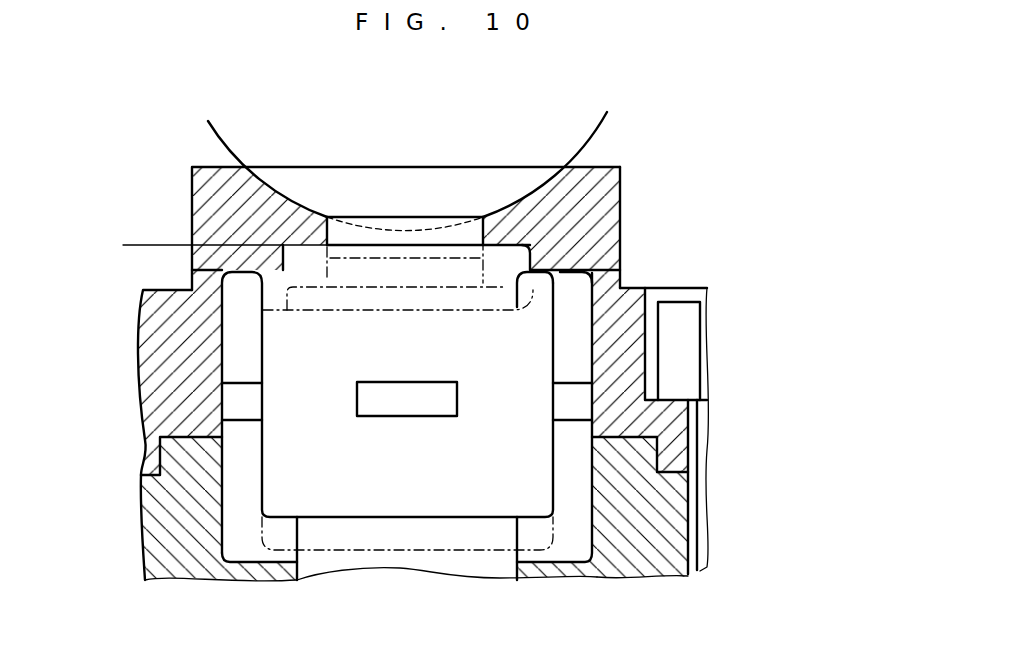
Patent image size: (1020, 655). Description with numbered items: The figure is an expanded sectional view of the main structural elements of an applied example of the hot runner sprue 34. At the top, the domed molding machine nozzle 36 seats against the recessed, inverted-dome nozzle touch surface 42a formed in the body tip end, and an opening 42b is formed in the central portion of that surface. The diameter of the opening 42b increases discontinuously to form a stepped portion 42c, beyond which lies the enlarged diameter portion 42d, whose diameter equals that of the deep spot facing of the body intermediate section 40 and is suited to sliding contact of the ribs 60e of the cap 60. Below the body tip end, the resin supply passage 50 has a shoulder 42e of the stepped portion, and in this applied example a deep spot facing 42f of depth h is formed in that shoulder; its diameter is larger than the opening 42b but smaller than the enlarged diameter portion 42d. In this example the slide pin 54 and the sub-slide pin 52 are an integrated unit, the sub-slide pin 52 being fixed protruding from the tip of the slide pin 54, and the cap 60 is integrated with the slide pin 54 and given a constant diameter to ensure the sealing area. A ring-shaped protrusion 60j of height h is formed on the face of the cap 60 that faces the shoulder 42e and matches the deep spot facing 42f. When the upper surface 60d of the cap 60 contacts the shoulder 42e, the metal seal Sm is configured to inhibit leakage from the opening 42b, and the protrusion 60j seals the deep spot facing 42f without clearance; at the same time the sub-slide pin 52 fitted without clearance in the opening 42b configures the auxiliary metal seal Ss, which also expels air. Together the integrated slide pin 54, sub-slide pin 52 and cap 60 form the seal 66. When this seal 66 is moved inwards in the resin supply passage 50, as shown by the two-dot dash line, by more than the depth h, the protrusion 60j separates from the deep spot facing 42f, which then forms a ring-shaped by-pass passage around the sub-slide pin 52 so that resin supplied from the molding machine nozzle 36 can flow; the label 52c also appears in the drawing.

The hot runner sprue 34 is at (708, 148).
The molding machine nozzle 36 is at (610, 118).
The body intermediate section 40 is at (146, 519).
The nozzle touch surface 42a is at (273, 188).
The opening 42b is at (336, 216).
The stepped portion 42c is at (368, 277).
The enlarged diameter portion 42d is at (585, 347).
The shoulder 42e is at (517, 275).
The deep spot facing 42f is at (588, 348).
The resin supply passage 50 is at (575, 537).
The sub-slide pin 52 is at (500, 287).
The imaging element center 52c is at (397, 250).
The slide pin 54 is at (518, 534).
The cap 60 is at (562, 430).
The upper surface of cap 60d is at (530, 272).
The ribs 60e is at (437, 382).
The protrusion 60j is at (522, 300).
The seal 66 is at (567, 487).
The seal Ss is at (325, 234).
The seal Sm is at (256, 268).
The depth of deep spot facing and height of protrusion h is at (192, 272).